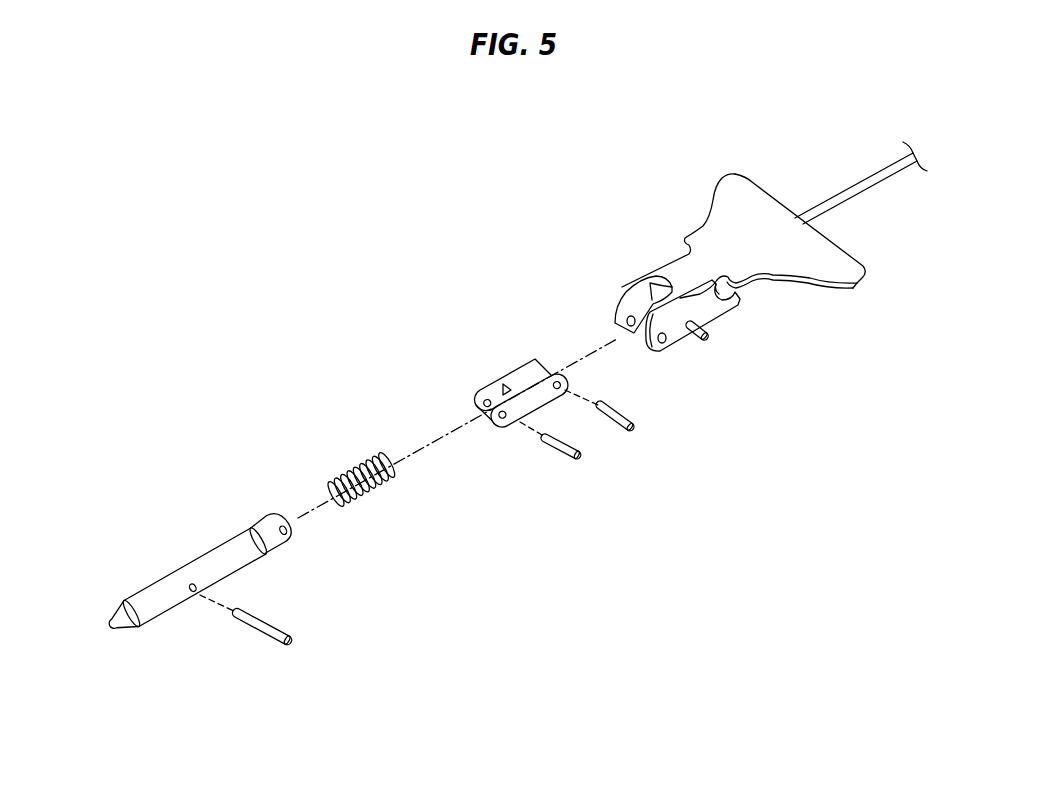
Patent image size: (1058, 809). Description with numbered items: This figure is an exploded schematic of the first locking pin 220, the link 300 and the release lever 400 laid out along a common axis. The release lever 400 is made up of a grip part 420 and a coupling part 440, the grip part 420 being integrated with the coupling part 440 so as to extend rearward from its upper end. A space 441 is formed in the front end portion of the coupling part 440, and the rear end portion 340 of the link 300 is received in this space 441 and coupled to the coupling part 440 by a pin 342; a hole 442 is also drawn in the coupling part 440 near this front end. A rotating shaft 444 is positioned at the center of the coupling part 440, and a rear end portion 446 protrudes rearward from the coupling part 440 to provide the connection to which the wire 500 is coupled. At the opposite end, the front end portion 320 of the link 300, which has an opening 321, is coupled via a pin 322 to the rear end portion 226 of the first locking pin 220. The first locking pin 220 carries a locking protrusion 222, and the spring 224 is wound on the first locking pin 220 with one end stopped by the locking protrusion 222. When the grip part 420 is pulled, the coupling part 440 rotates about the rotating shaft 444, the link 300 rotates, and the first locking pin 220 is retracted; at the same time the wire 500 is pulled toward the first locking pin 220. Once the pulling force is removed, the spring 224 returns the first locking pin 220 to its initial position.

The first locking pin 220 is at (172, 578).
The locking protrusion 222 is at (262, 633).
The spring 224 is at (353, 508).
The rear end portion of the first locking pin 226 is at (267, 518).
The link 300 is at (549, 404).
The front end portion of the link 320 is at (473, 422).
The opening 321 is at (478, 418).
The pin 322 is at (577, 455).
The rear end portion of the link 340 is at (533, 370).
The pin 342 is at (631, 429).
The release lever 400 is at (715, 275).
The grip part 420 is at (780, 216).
The coupling part 440 is at (738, 355).
The space 441 is at (636, 302).
The hole 442 is at (665, 345).
The rotating shaft 444 is at (707, 337).
The rear end portion of the coupling part 446 is at (721, 311).
The wire 500 is at (876, 176).